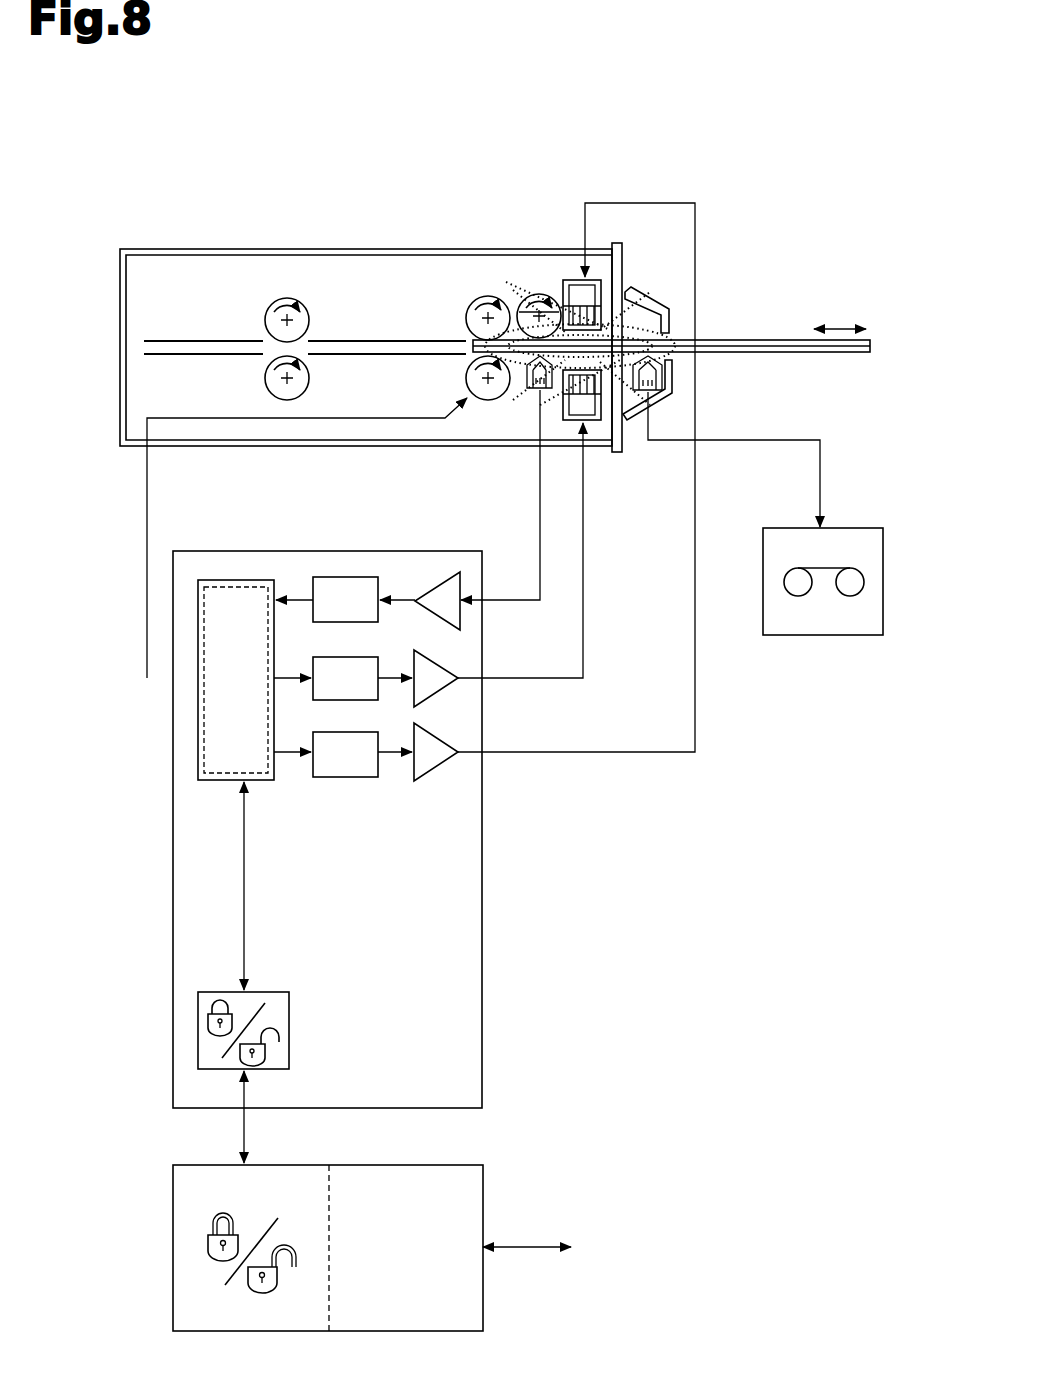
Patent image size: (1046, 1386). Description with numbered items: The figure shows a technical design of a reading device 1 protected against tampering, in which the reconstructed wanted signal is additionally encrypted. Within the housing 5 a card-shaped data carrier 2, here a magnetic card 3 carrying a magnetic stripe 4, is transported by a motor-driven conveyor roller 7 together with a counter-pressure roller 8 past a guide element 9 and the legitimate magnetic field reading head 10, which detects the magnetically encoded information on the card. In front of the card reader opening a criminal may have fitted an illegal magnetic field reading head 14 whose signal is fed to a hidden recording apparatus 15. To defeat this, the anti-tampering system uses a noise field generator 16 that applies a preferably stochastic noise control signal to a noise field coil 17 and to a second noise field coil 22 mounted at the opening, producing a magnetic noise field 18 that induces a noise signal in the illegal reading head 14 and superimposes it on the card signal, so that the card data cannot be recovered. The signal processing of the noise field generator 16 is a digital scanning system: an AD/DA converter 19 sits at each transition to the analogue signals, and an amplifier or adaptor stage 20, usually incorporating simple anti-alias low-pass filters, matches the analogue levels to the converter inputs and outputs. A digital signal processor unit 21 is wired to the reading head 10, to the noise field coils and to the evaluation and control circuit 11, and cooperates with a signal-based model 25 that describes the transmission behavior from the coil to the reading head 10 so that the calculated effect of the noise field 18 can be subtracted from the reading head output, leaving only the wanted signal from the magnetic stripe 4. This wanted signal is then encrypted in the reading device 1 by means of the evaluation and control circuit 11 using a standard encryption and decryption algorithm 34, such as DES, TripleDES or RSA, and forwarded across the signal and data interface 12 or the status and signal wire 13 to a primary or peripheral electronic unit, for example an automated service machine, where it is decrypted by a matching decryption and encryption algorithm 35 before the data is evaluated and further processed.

The reading device 1 is at (201, 228).
The card-shaped data carrier 2 is at (769, 333).
The magnetic card 3 is at (796, 341).
The magnetic stripe 4 is at (860, 353).
The housing 5 is at (437, 248).
The conveyor roller 7 is at (483, 398).
The counter-pressure roller 8 is at (488, 296).
The guide element 9 is at (347, 335).
The magnetic field reading head 10 is at (518, 402).
The evaluation and control circuit 11 is at (519, 1020).
The signal and data interface 12 is at (211, 1077).
The status and signal wire 13 is at (242, 1118).
The magnetic field reading head 14 is at (676, 381).
The recording apparatus 15 is at (864, 648).
The noise field generator 16 is at (458, 729).
The noise field coil 17 is at (650, 392).
The magnetic noise field 18 is at (655, 310).
The AD/DA converter 19 is at (326, 585).
The amplifier or adaptor stage 20 is at (457, 610).
The digital signal processor unit 21 is at (180, 763).
The second noise field coil 22 is at (574, 279).
The signal-based model 25 is at (216, 705).
The encryption and decryption algorithm 34 is at (208, 1045).
The decryption and encryption algorithm 35 is at (200, 1268).